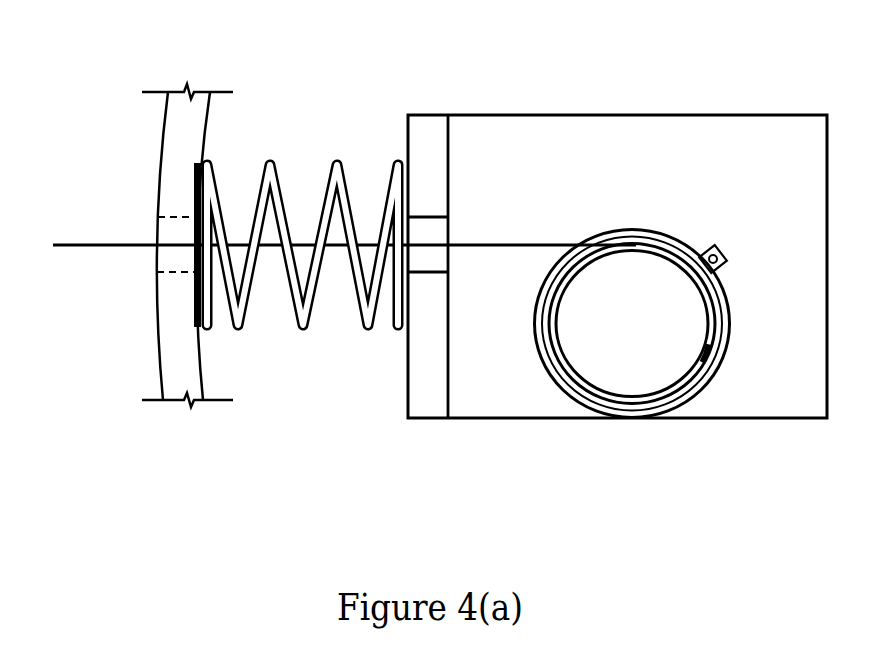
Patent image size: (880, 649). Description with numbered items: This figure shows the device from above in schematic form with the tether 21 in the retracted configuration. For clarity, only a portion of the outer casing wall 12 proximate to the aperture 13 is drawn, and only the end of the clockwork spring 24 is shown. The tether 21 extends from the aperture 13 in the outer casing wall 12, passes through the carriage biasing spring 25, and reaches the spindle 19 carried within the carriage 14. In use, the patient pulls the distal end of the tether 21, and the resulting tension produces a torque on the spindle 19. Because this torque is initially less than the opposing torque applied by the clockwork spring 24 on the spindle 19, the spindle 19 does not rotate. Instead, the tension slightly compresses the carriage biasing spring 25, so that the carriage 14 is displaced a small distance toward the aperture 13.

The outer casing wall 12 is at (181, 149).
The aperture 13 is at (175, 233).
The tether 21 is at (86, 247).
The carriage biasing spring 25 is at (337, 160).
The carriage 14 is at (743, 165).
The spindle 19 is at (630, 342).
The clockwork spring 24 is at (717, 365).